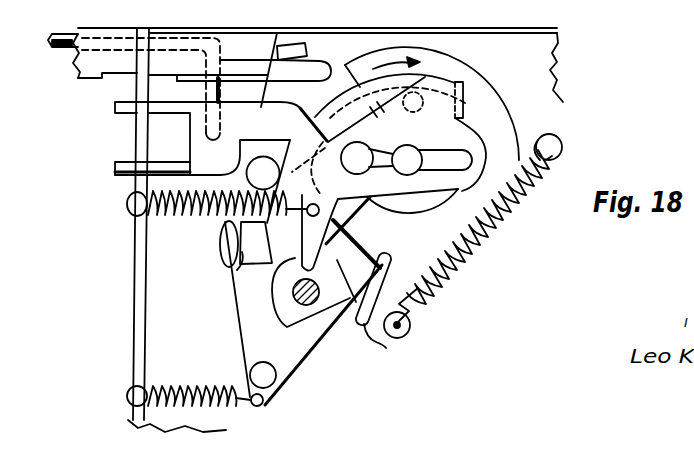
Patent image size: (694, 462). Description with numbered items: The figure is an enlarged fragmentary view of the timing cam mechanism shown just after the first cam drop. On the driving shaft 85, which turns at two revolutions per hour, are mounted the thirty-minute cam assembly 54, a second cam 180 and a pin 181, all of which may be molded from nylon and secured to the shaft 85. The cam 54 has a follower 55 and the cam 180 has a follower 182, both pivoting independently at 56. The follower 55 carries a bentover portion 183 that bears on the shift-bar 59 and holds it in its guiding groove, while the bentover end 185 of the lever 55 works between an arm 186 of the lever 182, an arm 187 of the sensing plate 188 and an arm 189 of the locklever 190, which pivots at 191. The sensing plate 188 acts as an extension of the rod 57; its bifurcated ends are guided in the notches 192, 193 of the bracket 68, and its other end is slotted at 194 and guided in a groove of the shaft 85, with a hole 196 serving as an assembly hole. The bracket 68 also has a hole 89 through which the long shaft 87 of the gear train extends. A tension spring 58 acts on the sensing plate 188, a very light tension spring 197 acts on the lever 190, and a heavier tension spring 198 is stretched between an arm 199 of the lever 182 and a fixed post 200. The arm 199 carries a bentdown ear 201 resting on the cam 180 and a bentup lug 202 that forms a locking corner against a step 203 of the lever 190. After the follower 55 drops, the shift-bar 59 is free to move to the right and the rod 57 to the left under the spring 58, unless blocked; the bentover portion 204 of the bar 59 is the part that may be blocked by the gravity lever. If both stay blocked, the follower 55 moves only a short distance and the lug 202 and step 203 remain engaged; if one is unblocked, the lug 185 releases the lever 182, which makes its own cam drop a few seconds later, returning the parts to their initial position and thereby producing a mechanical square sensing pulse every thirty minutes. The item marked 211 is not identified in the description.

The cam assembly 54 is at (422, 246).
The follower 55 is at (303, 102).
The pivot 56 is at (272, 183).
The rod 57 is at (221, 92).
The tension spring 58 is at (203, 222).
The shift-bar 59 is at (258, 60).
The bracket 68 is at (175, 307).
The shaft 85 is at (409, 150).
The long shaft 87 is at (306, 306).
The hole 89 is at (284, 284).
The cam 180 is at (425, 209).
The pin 181 is at (421, 78).
The follower 182 is at (350, 273).
The bentover portion 183 is at (298, 48).
The bentover end 185 is at (237, 270).
The arm 186 is at (226, 230).
The arm 187 is at (308, 253).
The sensing plate 188 is at (226, 164).
The arm 189 is at (238, 310).
The locklever 190 is at (282, 360).
The pivot 191 is at (271, 380).
The notch 192 is at (134, 114).
The notch 193 is at (133, 160).
The slot 194 is at (436, 154).
The assembly hole 196 is at (366, 148).
The tension spring 197 is at (180, 386).
The tension spring 198 is at (447, 288).
The arm 199 is at (411, 336).
The fixed post 200 is at (558, 141).
The bentdown ear 201 is at (360, 250).
The bentup lug 202 is at (380, 349).
The step 203 is at (357, 306).
The bentover portion 204 is at (130, 78).
The tab 211 is at (465, 87).